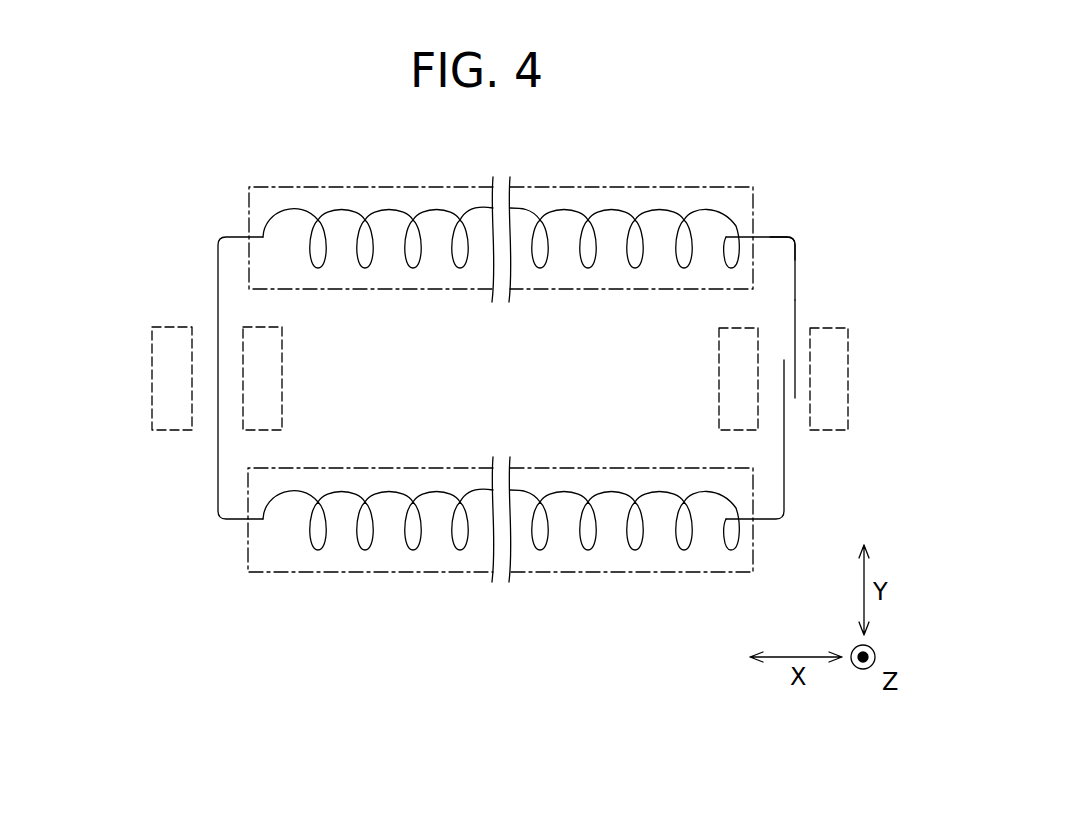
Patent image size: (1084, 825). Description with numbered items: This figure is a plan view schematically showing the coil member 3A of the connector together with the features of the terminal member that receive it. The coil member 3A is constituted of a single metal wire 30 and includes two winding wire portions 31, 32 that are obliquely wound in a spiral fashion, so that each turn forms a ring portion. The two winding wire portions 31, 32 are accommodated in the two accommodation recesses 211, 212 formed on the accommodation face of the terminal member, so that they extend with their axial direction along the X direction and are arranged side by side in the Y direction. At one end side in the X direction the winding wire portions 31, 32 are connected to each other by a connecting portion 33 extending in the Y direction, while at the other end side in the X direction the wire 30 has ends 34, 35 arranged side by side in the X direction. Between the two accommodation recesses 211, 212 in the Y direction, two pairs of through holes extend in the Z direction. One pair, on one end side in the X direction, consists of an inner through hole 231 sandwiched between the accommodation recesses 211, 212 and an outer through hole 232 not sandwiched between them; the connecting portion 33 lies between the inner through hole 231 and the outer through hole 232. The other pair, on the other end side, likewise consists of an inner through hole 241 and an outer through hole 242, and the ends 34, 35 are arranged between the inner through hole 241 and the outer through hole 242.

The coil member 3A is at (762, 237).
The wire 30 is at (780, 237).
The winding wire portion 31 is at (585, 550).
The winding wire portion 32 is at (567, 208).
The connecting portion 33 is at (218, 294).
The end 34 is at (780, 386).
The end 35 is at (795, 385).
The accommodation recess 211 is at (366, 572).
The accommodation recess 212 is at (370, 185).
The inner through hole 231 is at (283, 375).
The outer through hole 232 is at (152, 375).
The inner through hole 241 is at (719, 375).
The outer through hole 242 is at (849, 375).